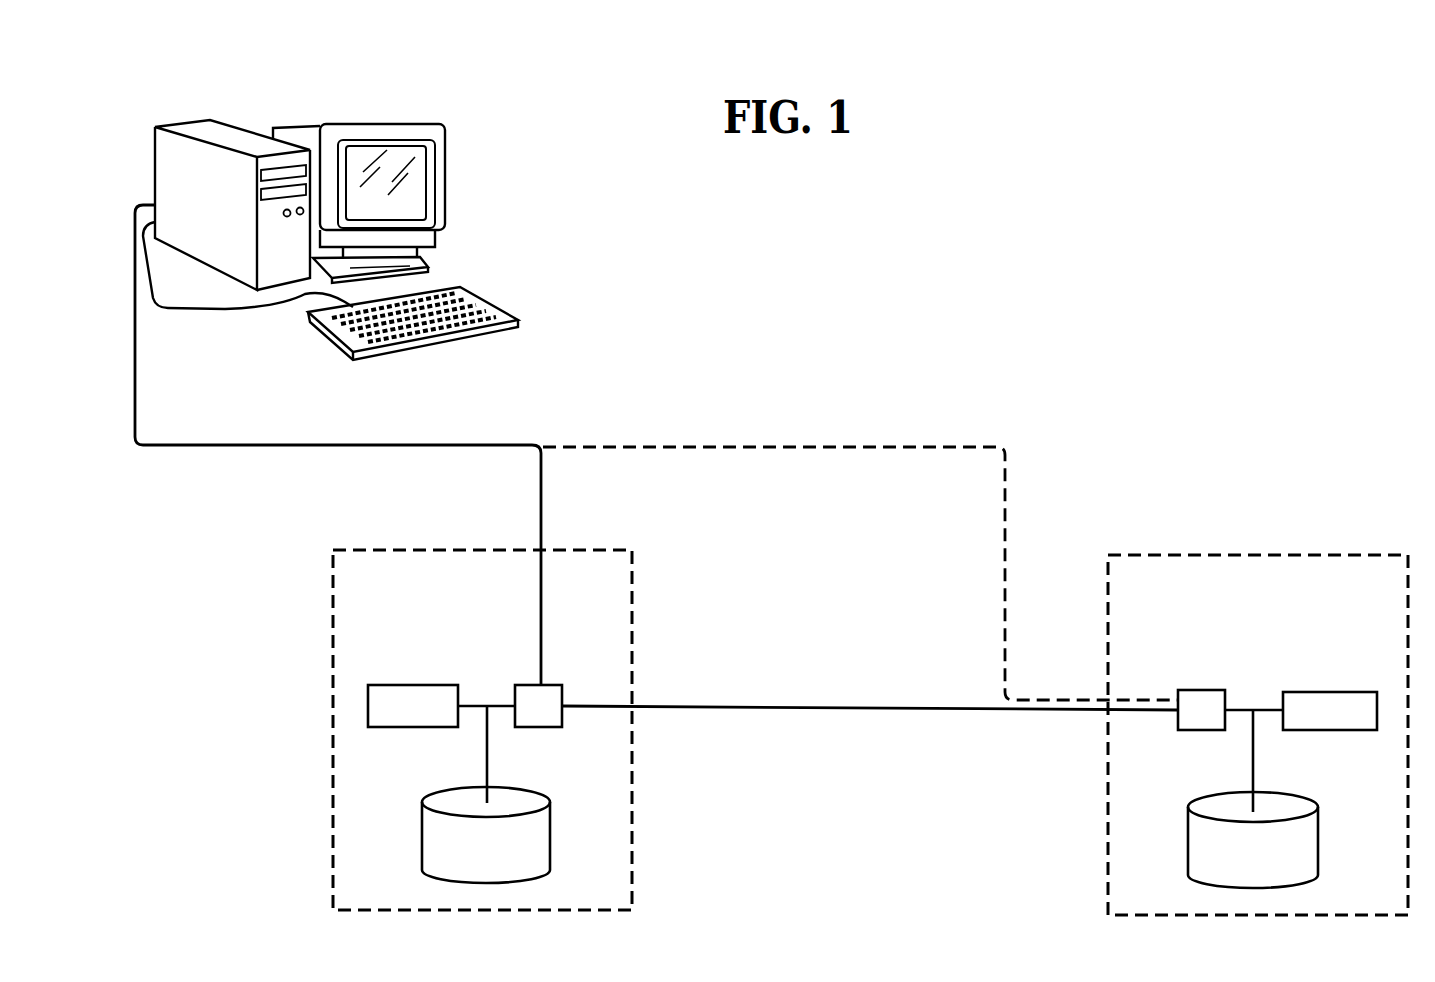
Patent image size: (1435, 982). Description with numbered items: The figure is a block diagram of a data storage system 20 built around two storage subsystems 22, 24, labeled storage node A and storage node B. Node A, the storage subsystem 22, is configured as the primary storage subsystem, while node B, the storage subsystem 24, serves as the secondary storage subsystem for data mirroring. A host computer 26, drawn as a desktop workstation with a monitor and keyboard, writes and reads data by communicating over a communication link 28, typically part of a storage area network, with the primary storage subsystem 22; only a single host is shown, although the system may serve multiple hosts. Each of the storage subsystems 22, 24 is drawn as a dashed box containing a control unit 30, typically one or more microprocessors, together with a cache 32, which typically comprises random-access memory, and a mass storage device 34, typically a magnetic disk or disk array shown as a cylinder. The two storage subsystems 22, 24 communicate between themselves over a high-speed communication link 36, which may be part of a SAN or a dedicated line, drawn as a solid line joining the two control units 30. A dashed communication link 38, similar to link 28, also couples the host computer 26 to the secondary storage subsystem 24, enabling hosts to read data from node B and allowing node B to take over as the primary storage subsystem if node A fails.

The data storage system 20 is at (1178, 248).
The storage subsystem 22 is at (401, 549).
The storage subsystem 24 is at (1338, 555).
The host computer 26 is at (185, 126).
The communication link 28 is at (238, 445).
The control unit 30 is at (540, 727).
The cache 32 is at (415, 727).
The mass storage device 34 is at (422, 835).
The high-speed communication link 36 is at (750, 708).
The communication link 38 is at (630, 447).